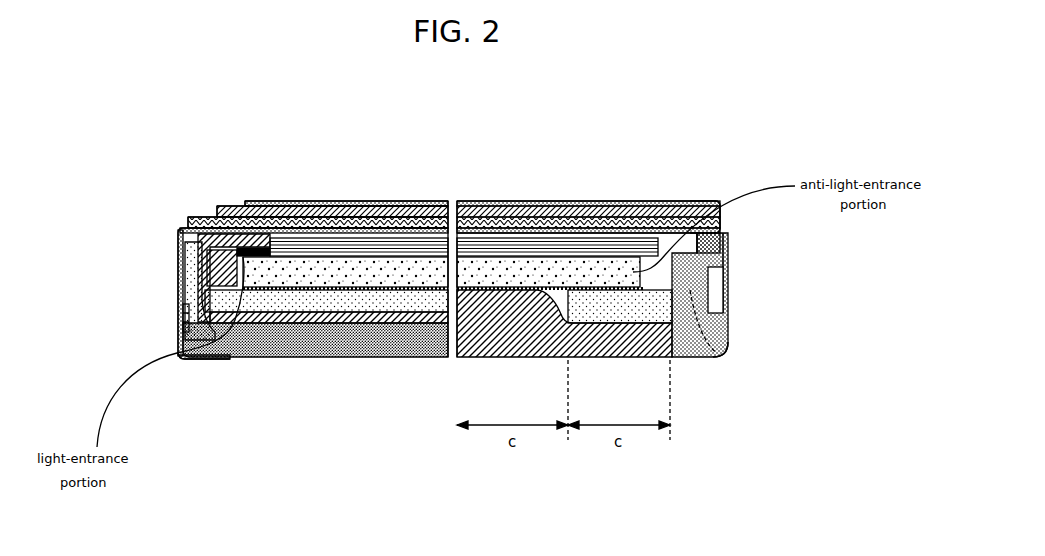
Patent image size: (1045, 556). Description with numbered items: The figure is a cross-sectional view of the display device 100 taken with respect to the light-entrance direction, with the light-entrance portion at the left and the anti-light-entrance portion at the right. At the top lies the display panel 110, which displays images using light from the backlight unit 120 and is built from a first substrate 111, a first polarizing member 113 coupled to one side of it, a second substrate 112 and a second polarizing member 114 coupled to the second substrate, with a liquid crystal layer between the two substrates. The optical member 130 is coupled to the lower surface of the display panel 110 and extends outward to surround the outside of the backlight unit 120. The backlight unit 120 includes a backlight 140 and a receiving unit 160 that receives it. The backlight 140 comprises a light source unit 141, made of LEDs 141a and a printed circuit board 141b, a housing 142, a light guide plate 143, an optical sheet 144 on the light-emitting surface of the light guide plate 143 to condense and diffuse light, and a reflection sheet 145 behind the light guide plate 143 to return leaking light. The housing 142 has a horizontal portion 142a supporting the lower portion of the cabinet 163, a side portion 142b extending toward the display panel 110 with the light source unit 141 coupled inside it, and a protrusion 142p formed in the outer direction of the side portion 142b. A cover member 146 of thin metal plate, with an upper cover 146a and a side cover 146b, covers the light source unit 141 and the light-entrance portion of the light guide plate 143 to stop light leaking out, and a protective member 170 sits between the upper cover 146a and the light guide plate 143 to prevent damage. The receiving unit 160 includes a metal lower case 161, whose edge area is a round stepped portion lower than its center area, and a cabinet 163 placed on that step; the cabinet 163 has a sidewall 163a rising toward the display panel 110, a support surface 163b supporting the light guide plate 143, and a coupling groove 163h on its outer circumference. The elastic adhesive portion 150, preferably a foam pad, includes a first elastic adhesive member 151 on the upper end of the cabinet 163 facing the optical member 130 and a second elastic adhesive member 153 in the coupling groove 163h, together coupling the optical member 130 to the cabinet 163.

The display device 100 is at (136, 86).
The display panel 110 is at (682, 143).
The first substrate 111 is at (663, 202).
The second substrate 112 is at (618, 202).
The first polarizing member 113 is at (640, 202).
The second polarizing member 114 is at (582, 202).
The backlight unit 120 is at (425, 498).
The optical member 130 is at (177, 230).
The backlight 140 is at (527, 143).
The light source unit 141 is at (253, 143).
The LEDs 141a is at (243, 205).
The printed circuit board 141b is at (194, 215).
The housing 142 is at (310, 473).
The horizontal portion 142a is at (283, 358).
The side portion 142b is at (240, 358).
The protrusion 142p is at (192, 363).
The light guide plate 143 is at (533, 265).
The optical sheet 144 is at (695, 210).
The reflection sheet 145 is at (487, 287).
The cover member 146 is at (115, 262).
The upper cover 146a is at (177, 265).
The side cover 146b is at (177, 320).
The elastic adhesive portion 150 is at (790, 255).
The first elastic adhesive member 151 is at (728, 257).
The second elastic adhesive member 153 is at (718, 278).
The receiving unit 160 is at (818, 397).
The lower case 161 is at (483, 360).
The cabinet 163 is at (793, 340).
The sidewall 163a is at (617, 305).
The support surface 163b is at (697, 357).
The coupling groove 163h is at (723, 345).
The protective member 170 is at (282, 200).